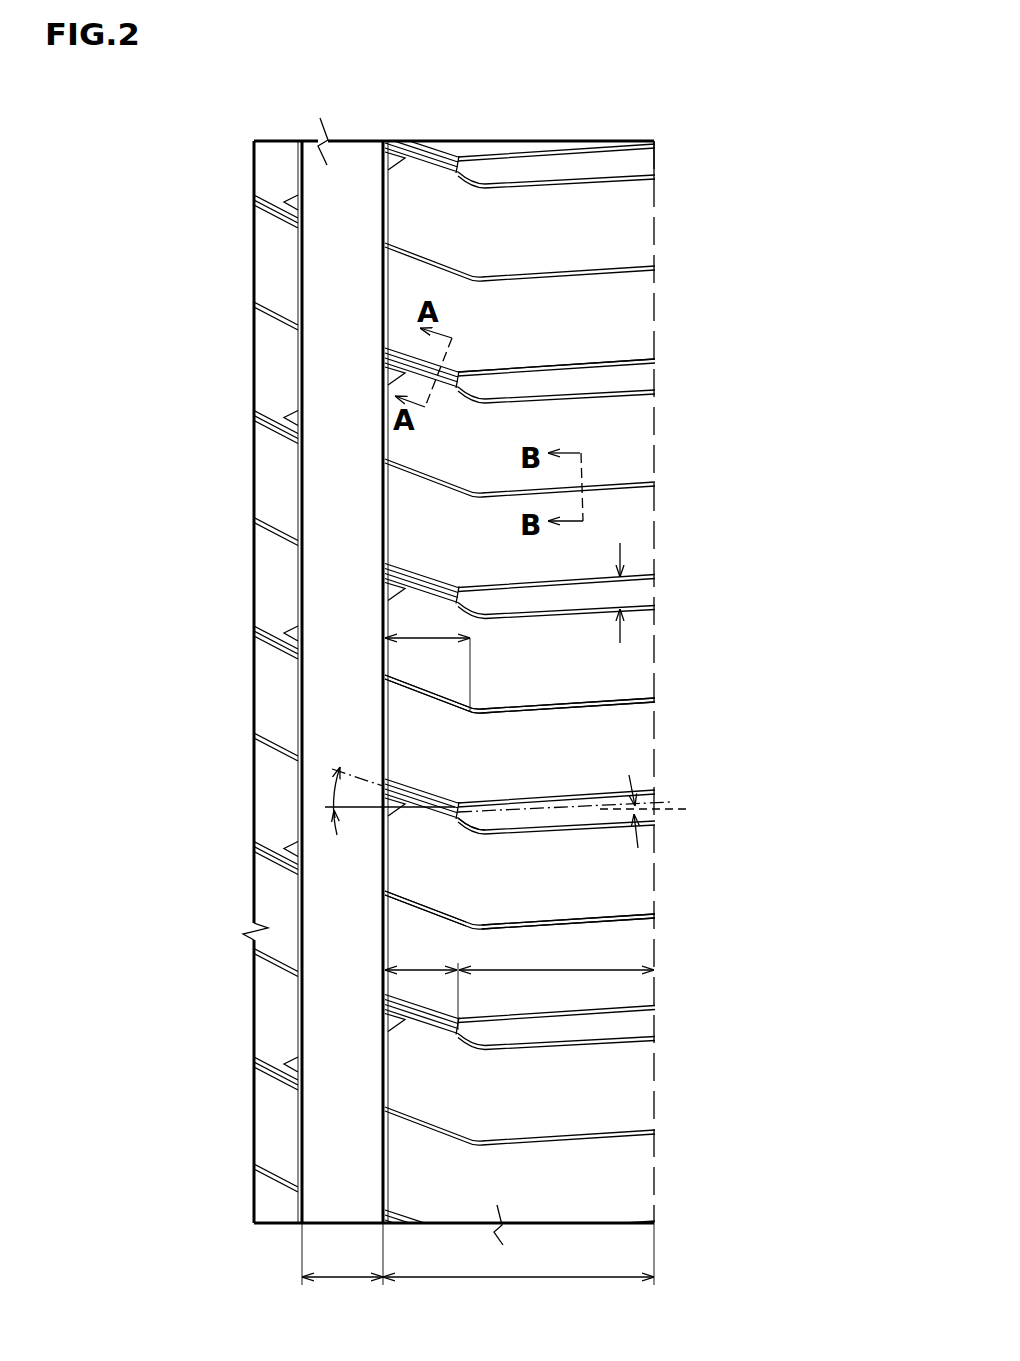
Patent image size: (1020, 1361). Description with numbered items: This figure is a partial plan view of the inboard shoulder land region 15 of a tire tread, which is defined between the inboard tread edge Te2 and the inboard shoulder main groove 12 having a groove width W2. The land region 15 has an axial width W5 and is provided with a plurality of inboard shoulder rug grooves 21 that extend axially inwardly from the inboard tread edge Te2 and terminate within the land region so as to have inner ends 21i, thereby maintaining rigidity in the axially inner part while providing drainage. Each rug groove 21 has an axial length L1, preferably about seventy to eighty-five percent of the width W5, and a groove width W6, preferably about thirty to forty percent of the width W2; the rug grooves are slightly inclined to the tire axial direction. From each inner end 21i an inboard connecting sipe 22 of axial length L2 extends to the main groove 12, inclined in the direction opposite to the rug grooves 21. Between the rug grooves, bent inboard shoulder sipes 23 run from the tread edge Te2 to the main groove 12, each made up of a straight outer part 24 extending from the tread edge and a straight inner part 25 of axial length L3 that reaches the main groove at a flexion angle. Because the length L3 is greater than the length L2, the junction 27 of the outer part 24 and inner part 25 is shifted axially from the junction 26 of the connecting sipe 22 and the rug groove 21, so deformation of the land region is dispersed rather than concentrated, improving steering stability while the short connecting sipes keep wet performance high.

The inboard shoulder main groove 12 is at (357, 192).
The inboard shoulder land region 15 is at (488, 220).
The inboard shoulder rug groove 21 is at (580, 382).
The inner end 21i is at (477, 381).
The inboard connecting sipe 22 is at (416, 358).
The inboard shoulder sipe 23 is at (554, 268).
The outer part 24 is at (576, 701).
The inner part 25 is at (426, 691).
The junction 26 is at (450, 824).
The junction 27 is at (472, 713).
The inboard tread edge Te2 is at (656, 157).
The groove width of the inboard shoulder main groove W2 is at (342, 1266).
The axial width of the inboard shoulder land region W5 is at (518, 1266).
The groove width of the inboard shoulder rug grooves W6 is at (622, 590).
The axial length of the inboard shoulder rug grooves L1 is at (556, 950).
The axial length of the inboard connecting sipes L2 is at (421, 980).
The axial length of the inner part L3 is at (427, 658).